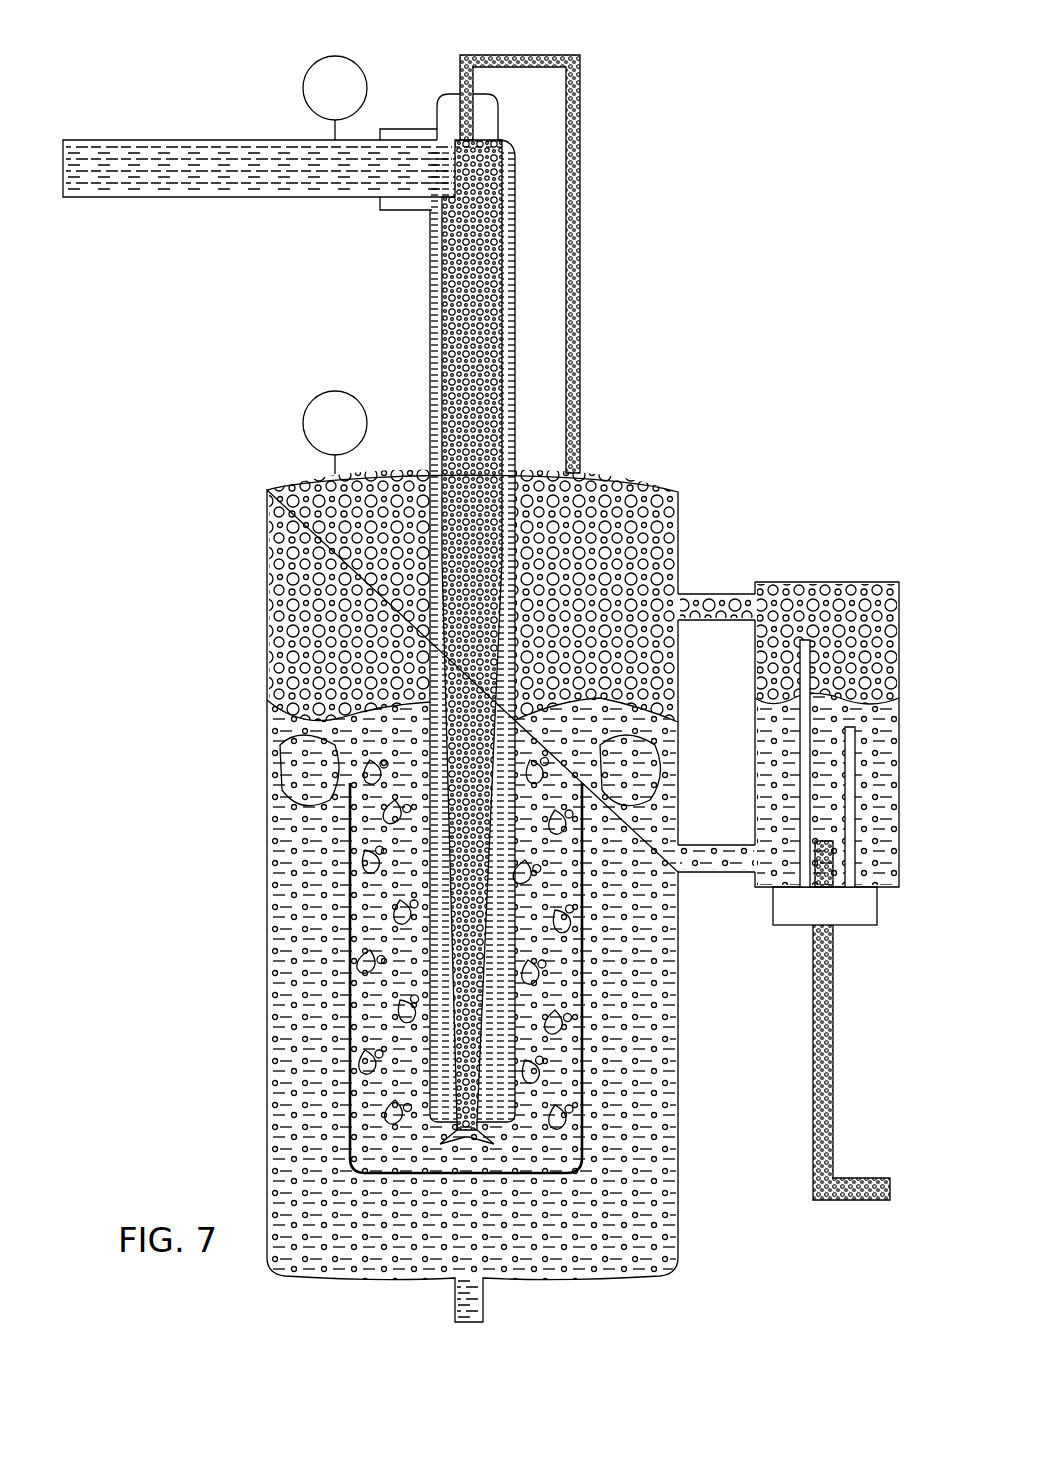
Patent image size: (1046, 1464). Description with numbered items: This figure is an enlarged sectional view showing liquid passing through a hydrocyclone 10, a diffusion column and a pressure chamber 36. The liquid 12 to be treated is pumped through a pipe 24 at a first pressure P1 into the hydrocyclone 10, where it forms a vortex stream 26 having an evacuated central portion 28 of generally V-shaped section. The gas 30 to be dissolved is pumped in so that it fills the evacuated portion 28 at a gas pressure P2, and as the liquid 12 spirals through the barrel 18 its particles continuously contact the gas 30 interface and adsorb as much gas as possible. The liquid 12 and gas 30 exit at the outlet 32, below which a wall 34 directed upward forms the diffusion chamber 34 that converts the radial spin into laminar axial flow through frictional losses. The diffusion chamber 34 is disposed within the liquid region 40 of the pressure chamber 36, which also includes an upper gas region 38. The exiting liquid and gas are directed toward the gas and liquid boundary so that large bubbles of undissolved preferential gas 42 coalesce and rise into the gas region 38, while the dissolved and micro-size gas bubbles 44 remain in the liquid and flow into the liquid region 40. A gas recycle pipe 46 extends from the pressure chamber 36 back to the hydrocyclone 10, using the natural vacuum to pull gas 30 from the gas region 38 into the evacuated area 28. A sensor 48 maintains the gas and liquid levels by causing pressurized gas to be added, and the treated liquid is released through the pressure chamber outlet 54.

The hydrocyclone 10 is at (428, 271).
The liquid 12 is at (150, 160).
The barrel 18 is at (435, 345).
The pipe 24 is at (222, 140).
The vortex stream 26 is at (435, 315).
The evacuated central portion 28 is at (478, 282).
The gas 30 is at (816, 1010).
The outlet 32 is at (500, 1131).
The diffusion chamber 34 is at (350, 1087).
The pressure chamber 36 is at (265, 651).
The gas region 38 is at (305, 553).
The liquid region 40 is at (290, 993).
The large bubbles of undissolved preferential gas 42 is at (345, 752).
The dissolved and micro-size gas bubbles 44 is at (302, 912).
The gas recycle pipe 46 is at (580, 372).
The sensor 48 is at (808, 918).
The pressure chamber outlet 54 is at (477, 1312).
The first pressure P1 is at (327, 82).
The gas pressure P2 is at (322, 412).